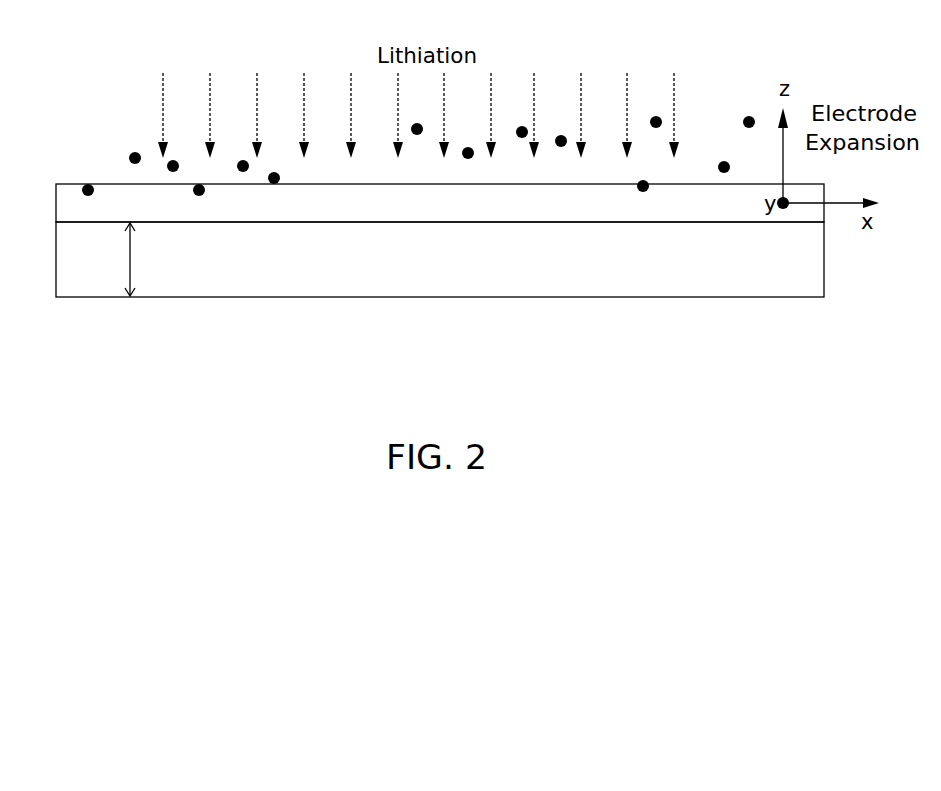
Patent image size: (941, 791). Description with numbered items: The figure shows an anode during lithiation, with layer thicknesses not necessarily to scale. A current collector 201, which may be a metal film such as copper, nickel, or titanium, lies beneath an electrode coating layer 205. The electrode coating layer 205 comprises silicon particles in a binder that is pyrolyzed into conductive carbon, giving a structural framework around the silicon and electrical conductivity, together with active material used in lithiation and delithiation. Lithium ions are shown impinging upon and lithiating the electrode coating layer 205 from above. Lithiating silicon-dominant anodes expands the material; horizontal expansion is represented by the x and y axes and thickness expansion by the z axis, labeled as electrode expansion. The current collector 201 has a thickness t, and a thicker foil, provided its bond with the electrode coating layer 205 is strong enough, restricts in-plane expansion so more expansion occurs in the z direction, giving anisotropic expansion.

The electrode coating layer 205 is at (605, 215).
The current collector 201 is at (565, 270).
The thickness t is at (126, 259).